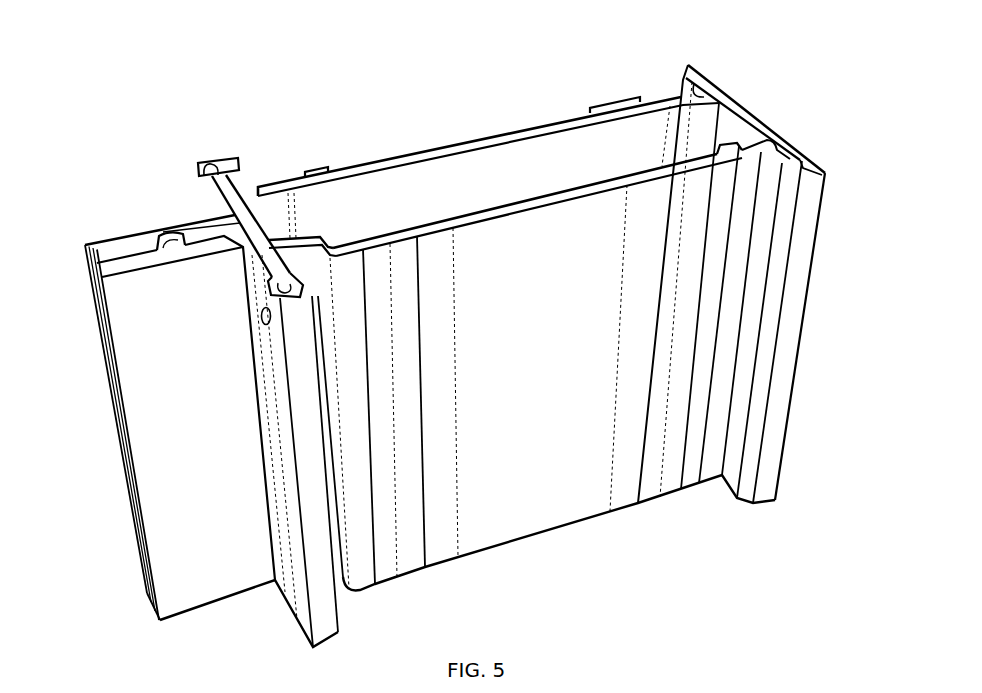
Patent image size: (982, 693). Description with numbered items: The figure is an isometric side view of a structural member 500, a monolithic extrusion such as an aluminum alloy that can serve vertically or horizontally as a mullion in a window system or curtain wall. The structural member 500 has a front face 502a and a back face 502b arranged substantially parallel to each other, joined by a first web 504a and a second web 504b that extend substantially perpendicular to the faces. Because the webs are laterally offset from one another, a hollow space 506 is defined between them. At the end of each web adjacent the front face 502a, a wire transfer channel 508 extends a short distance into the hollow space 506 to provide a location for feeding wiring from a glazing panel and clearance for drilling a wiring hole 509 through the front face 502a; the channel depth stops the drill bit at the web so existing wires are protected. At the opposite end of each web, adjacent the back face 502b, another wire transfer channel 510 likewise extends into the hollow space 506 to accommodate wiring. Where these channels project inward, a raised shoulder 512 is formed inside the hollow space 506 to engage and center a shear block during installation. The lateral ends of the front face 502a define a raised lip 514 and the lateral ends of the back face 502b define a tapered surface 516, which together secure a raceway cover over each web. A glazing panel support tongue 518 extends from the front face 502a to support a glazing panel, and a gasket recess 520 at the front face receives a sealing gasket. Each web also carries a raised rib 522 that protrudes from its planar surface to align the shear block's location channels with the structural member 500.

The structural member 500 is at (158, 124).
The front face 502a is at (204, 208).
The back face 502b is at (772, 118).
The first web 504a is at (503, 125).
The second web 504b is at (533, 540).
The hollow space 506 is at (489, 158).
The wire transfer channel 508 is at (285, 258).
The wiring hole 509 is at (262, 318).
The wire transfer channel 510 is at (700, 96).
The raised shoulder 512 is at (293, 197).
The raised lip 514 is at (228, 162).
The tapered surface 516 is at (684, 76).
The glazing panel support tongue 518 is at (172, 593).
The gasket recess 520 is at (197, 163).
The raised rib 522 is at (327, 165).